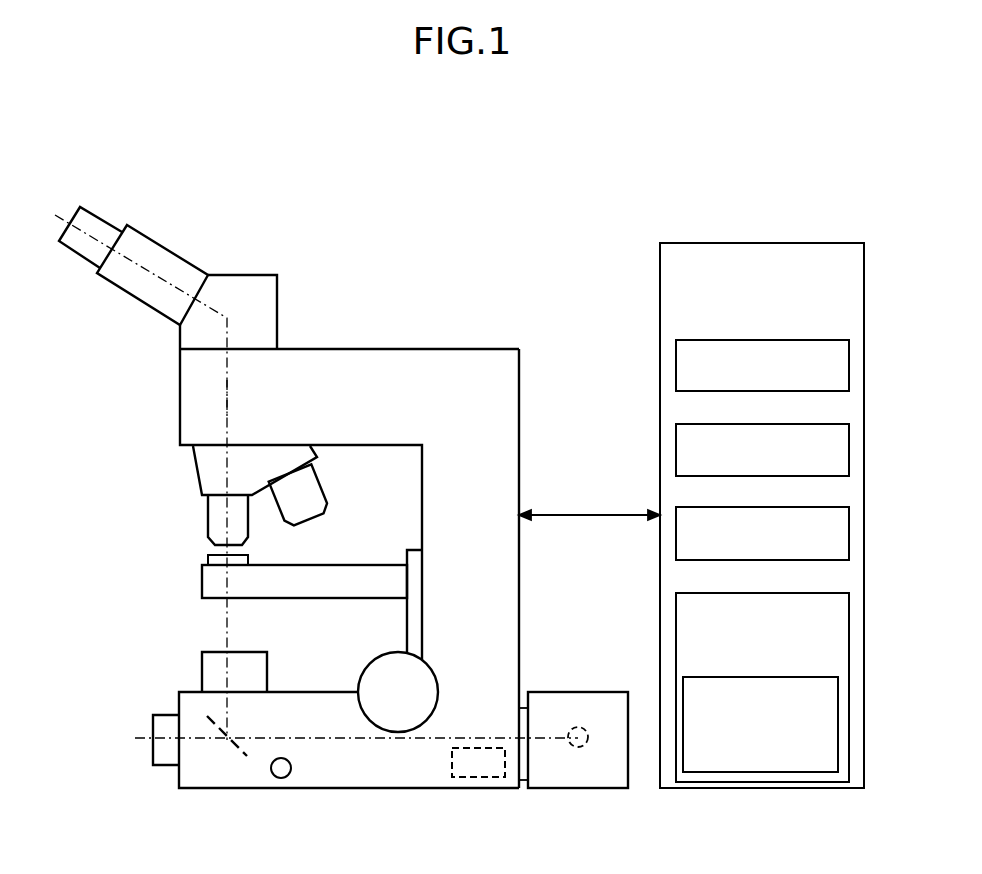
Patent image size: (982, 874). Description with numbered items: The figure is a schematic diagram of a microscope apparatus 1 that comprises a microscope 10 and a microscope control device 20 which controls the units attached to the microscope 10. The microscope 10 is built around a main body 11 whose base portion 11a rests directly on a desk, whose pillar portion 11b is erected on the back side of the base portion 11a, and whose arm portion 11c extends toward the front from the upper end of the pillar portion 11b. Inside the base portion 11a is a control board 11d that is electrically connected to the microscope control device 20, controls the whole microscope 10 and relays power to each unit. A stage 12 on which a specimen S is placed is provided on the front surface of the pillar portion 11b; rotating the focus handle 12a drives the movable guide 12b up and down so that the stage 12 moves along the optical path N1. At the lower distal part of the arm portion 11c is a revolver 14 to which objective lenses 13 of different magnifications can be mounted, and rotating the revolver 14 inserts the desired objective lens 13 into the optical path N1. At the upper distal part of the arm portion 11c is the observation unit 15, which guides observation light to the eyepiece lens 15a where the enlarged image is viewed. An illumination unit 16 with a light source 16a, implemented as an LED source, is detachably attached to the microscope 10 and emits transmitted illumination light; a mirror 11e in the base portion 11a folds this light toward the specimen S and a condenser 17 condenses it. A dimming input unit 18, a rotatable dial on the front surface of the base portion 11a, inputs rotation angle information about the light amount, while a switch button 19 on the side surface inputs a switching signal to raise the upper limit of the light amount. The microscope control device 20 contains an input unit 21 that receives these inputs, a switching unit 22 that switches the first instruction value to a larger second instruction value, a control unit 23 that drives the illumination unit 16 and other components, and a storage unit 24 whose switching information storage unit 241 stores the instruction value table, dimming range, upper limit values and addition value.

The microscope apparatus 1 is at (534, 152).
The microscope 10 is at (442, 314).
The main body 11 is at (519, 394).
The base portion 11a is at (378, 778).
The pillar portion 11b is at (507, 461).
The arm portion 11c is at (354, 356).
The control board 11d is at (480, 777).
The mirror 11e is at (235, 747).
The stage 12 is at (217, 580).
The focus handle 12a is at (378, 652).
The movable guide 12b is at (413, 550).
The objective lens 13 is at (218, 517).
The revolver 14 is at (213, 470).
The observation unit 15 is at (168, 245).
The eyepiece lens 15a is at (102, 213).
The illumination unit 16 is at (577, 778).
The light source 16a is at (575, 728).
The condenser 17 is at (268, 673).
The dimming input unit 18 is at (166, 715).
The switch button 19 is at (281, 778).
The microscope control device 20 is at (811, 243).
The input unit 21 is at (799, 340).
The switching unit 22 is at (799, 424).
The control unit 23 is at (799, 507).
The storage unit 24 is at (799, 593).
The switching information storage unit 241 is at (776, 677).
The optical path N1 is at (226, 397).
The specimen S is at (218, 556).